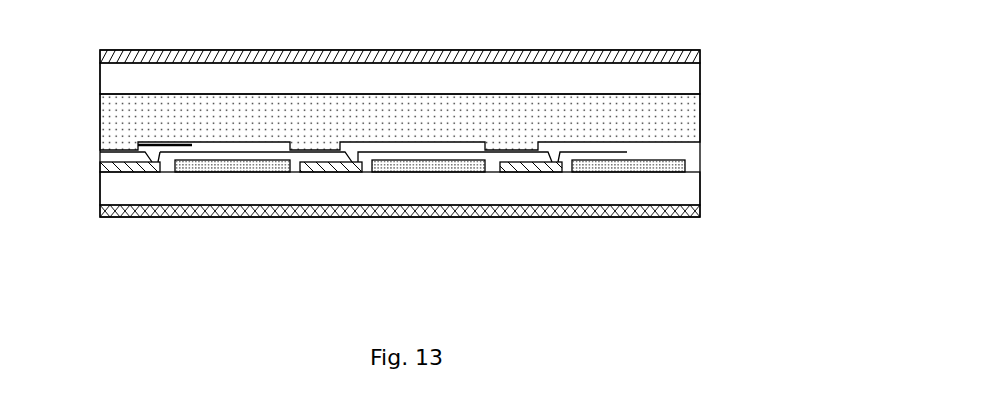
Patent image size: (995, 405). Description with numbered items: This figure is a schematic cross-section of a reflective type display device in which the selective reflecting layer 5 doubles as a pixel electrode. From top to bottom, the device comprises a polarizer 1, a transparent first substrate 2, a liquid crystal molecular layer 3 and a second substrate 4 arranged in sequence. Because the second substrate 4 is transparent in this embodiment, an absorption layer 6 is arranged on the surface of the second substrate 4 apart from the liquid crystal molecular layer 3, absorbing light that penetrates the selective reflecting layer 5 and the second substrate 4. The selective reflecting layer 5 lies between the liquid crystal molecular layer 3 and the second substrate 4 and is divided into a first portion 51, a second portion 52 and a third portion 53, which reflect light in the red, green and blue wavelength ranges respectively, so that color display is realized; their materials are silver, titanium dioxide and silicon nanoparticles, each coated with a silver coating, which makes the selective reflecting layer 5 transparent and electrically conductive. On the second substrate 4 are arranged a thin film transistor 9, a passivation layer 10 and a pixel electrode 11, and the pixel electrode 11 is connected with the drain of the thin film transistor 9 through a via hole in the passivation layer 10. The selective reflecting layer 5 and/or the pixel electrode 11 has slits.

The polarizer 1 is at (668, 52).
The first substrate 2 is at (666, 81).
The liquid crystal molecular layer 3 is at (666, 121).
The second substrate 4 is at (666, 186).
The selective reflecting layer 5 is at (430, 233).
The absorption layer 6 is at (666, 211).
The thin film transistor 9 is at (101, 166).
The passivation layer 10 is at (666, 157).
The pixel electrode 11 is at (138, 145).
The first portion 51 is at (270, 168).
The second portion 52 is at (430, 172).
The third portion 53 is at (620, 215).